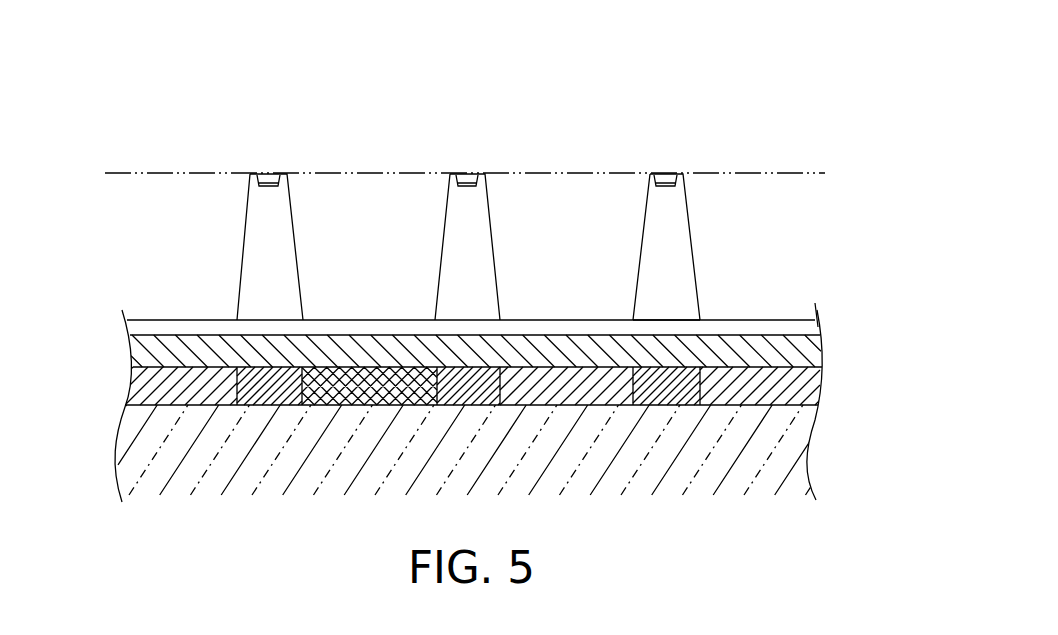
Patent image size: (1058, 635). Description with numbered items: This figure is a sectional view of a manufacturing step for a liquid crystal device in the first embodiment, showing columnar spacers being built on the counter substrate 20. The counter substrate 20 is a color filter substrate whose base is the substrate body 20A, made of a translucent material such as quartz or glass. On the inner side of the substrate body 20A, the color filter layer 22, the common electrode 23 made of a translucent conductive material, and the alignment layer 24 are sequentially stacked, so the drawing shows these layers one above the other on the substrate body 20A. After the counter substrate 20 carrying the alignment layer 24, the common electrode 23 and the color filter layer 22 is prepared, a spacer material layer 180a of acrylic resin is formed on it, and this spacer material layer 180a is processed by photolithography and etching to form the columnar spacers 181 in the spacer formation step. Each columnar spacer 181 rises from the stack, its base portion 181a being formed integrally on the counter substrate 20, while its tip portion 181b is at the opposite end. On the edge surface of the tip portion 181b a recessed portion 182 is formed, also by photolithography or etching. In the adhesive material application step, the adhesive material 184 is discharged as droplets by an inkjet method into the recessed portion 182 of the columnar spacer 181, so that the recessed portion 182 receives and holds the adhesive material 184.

The counter substrate 20 is at (95, 322).
The substrate body 20A is at (805, 440).
The color filter layer 22 is at (820, 380).
The common electrode 23 is at (820, 345).
The alignment layer 24 is at (817, 325).
The spacer material layer 180a is at (772, 170).
The columnar spacer 181 is at (667, 205).
The base portion 181a is at (650, 172).
The tip portion 181b is at (652, 320).
The recessed portion 182 is at (470, 172).
The adhesive material 184 is at (270, 172).